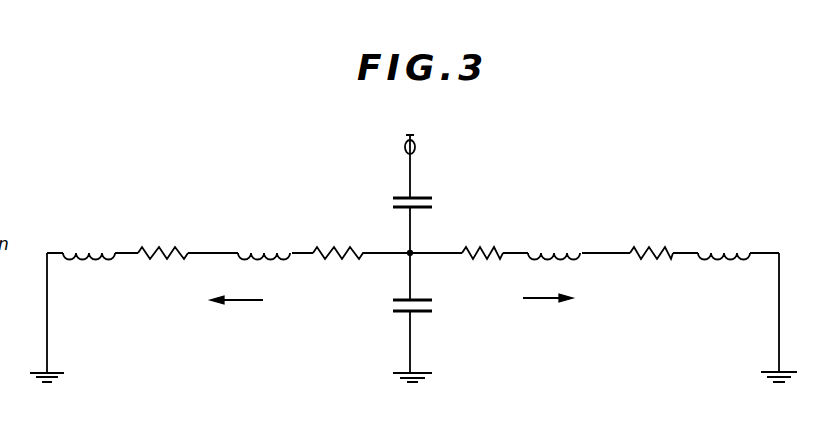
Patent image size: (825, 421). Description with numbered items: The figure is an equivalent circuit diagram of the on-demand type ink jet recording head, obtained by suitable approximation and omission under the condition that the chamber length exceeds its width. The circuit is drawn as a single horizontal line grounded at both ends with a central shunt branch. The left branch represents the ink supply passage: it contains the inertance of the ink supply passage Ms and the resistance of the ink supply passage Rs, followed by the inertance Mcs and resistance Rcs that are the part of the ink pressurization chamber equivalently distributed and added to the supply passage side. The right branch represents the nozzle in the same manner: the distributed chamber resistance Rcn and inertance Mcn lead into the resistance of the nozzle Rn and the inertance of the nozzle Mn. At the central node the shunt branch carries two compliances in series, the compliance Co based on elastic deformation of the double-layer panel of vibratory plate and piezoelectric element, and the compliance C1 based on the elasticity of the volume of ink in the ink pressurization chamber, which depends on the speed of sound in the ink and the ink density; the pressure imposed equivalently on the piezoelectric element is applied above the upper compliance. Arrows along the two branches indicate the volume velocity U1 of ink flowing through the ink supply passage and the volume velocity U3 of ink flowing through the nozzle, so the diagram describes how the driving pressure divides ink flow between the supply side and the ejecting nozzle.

The inertance of ink supply passage Ms is at (99, 244).
The resistance of ink supply passage Rs is at (175, 244).
The distributed inertance of ink pressurization chamber added to supply passage Mcs is at (277, 244).
The distributed resistance of ink pressurization chamber added to supply passage Rcs is at (357, 244).
The compliance of double-layer panel Co is at (434, 203).
The compliance of ink volume in pressurization chamber C1 is at (390, 309).
The distributed resistance of ink pressurization chamber added to nozzle Rcn is at (495, 245).
The distributed inertance of ink pressurization chamber added to nozzle Mcn is at (569, 246).
The resistance of nozzle Rn is at (664, 244).
The inertance of nozzle Mn is at (735, 244).
The volume velocity of ink through ink supply passage U1 is at (238, 303).
The volume velocity of ink through nozzle U3 is at (545, 301).